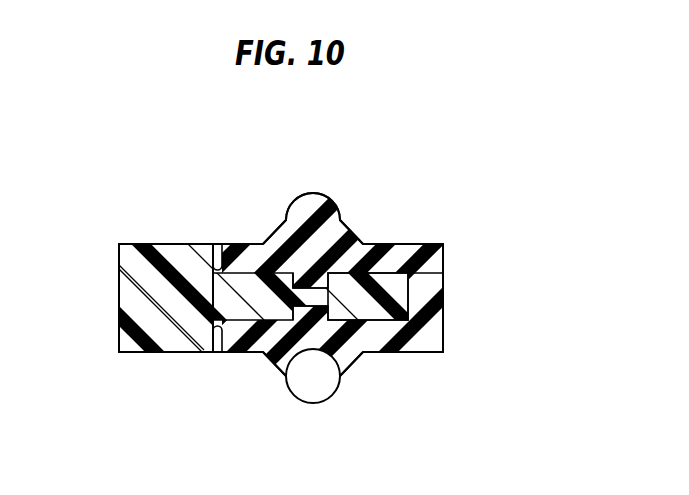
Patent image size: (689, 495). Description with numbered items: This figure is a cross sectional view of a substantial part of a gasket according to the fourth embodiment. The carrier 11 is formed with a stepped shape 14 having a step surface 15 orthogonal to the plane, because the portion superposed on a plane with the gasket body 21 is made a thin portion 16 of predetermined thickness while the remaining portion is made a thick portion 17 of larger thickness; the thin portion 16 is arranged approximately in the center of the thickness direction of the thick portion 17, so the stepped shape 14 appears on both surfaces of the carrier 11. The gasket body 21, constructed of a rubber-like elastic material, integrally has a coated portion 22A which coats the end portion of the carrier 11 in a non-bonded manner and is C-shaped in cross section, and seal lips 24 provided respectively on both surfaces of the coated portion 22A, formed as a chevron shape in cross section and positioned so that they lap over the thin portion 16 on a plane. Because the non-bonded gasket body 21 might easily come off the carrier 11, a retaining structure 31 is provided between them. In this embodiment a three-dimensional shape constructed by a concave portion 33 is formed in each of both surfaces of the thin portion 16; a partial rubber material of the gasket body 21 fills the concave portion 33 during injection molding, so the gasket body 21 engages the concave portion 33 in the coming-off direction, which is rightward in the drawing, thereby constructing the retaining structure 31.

The carrier 11 is at (140, 250).
The stepped shape 14 is at (231, 236).
The step surface 15 is at (223, 247).
The thin portion 16 is at (395, 293).
The thick portion 17 is at (135, 295).
The gasket body 21 is at (435, 272).
The coated portion 22A is at (402, 257).
The seal lip 24 is at (297, 205).
The retaining structure 31 is at (313, 262).
The concave portion 33 is at (330, 227).